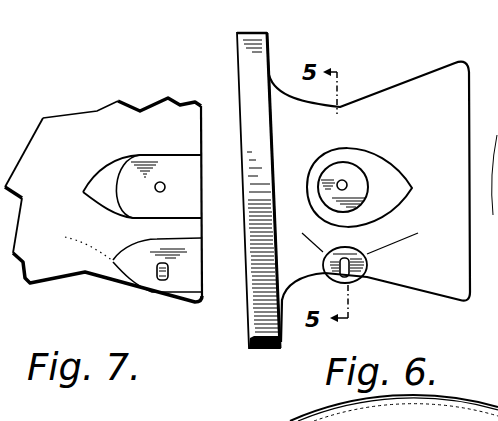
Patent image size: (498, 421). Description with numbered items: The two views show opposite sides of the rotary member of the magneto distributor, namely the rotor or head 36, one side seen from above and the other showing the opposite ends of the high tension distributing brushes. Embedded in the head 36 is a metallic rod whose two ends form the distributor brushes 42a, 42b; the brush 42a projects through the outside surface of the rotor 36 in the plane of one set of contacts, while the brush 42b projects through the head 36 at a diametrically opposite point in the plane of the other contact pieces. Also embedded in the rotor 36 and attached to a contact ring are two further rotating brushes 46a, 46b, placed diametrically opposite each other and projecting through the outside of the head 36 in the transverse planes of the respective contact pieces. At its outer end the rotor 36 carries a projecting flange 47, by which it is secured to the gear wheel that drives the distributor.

In FIG. 7, the rotor 36 is at (97, 117).
In FIG. 6, the rotor 36 is at (369, 202).
In FIG. 7, the rotating brush 46a is at (163, 182).
In FIG. 7, the distributor brush 42a is at (160, 281).
In FIG. 6, the projecting flange 47 is at (248, 63).
In FIG. 6, the rotating brush 46b is at (346, 181).
In FIG. 6, the distributor brush 42b is at (355, 280).